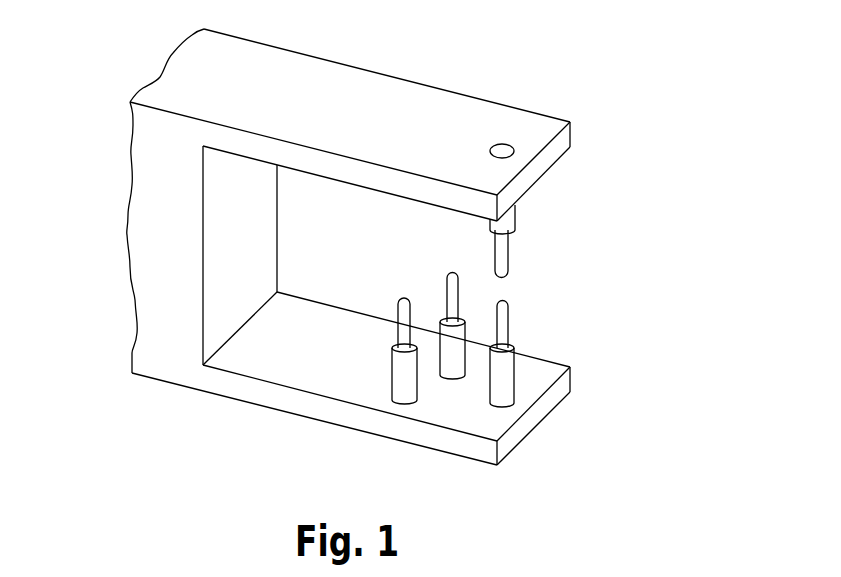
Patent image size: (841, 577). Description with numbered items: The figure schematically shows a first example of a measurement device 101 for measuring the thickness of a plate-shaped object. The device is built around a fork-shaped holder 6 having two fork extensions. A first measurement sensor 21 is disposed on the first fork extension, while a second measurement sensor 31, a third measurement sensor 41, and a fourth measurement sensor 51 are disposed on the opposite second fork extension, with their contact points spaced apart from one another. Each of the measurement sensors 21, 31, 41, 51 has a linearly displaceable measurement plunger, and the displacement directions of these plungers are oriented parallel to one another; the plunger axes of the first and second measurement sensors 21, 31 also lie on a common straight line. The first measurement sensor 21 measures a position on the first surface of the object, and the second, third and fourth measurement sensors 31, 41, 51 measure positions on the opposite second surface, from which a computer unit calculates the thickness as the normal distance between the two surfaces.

The measurement device 101 is at (640, 63).
The fork-shaped holder 6 is at (148, 278).
The first measurement sensor 21 is at (505, 255).
The second measurement sensor 31 is at (502, 330).
The third measurement sensor 41 is at (403, 312).
The fourth measurement sensor 51 is at (456, 280).